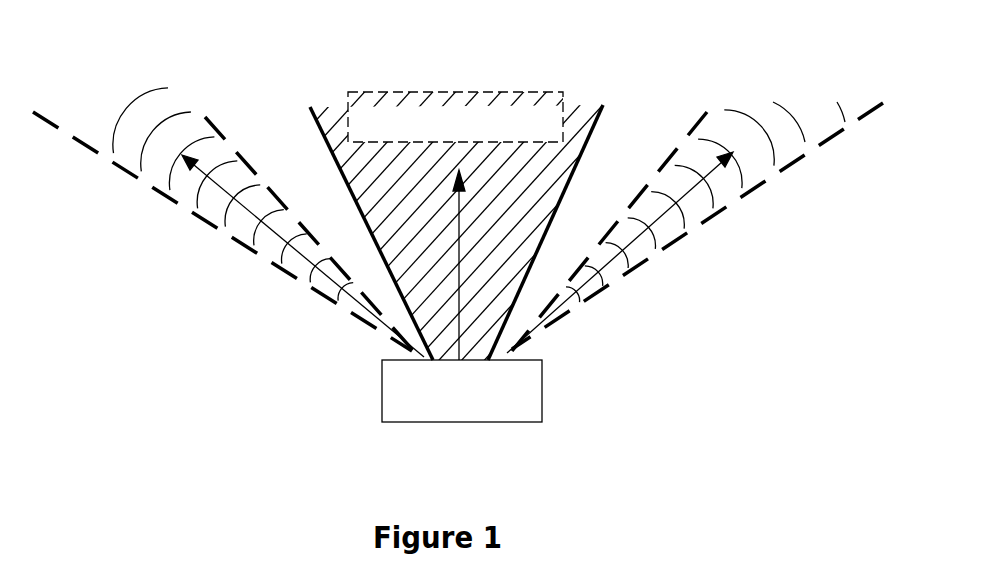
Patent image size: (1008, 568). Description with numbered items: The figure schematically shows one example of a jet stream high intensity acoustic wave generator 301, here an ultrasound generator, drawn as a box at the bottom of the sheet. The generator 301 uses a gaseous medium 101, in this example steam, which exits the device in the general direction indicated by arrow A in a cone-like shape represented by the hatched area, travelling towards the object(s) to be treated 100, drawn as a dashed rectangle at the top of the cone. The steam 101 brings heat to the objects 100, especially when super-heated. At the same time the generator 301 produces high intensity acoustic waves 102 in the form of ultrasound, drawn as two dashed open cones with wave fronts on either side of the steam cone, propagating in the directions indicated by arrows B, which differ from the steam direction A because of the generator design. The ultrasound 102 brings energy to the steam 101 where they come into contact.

The objects to be treated 100 is at (358, 85).
The gaseous medium 101 is at (577, 127).
The high intensity acoustic waves 102 is at (683, 308).
The high intensity acoustic wave generator 301 is at (410, 453).